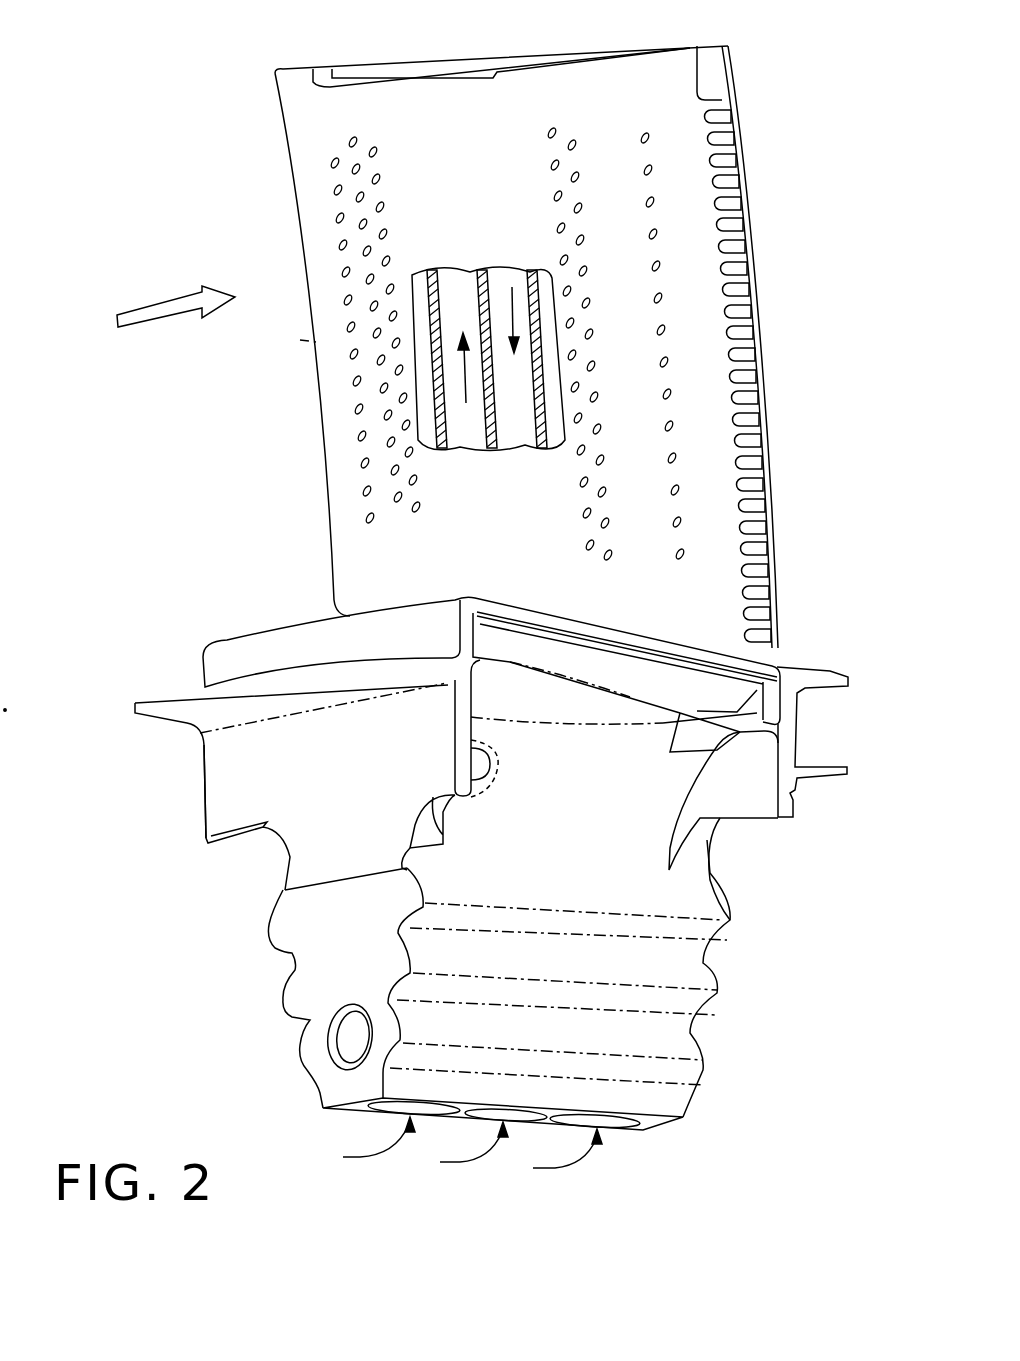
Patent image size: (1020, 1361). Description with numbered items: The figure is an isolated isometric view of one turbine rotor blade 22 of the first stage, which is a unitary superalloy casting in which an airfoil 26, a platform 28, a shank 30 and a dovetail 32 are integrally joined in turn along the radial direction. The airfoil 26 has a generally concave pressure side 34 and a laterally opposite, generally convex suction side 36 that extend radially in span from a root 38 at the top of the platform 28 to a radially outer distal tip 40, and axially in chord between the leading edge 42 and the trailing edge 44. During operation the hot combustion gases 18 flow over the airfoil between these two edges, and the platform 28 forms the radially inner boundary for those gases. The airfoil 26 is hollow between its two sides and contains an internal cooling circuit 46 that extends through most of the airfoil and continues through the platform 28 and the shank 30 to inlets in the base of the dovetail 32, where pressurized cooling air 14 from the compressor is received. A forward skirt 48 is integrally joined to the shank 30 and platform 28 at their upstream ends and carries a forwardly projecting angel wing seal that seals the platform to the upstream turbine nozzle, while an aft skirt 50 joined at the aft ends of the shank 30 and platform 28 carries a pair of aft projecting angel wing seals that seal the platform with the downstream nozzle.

The pressurized cooling air 14 is at (503, 300).
The hot combustion gases 18 is at (158, 303).
The turbine rotor blade 22 is at (770, 212).
The airfoil 26 is at (283, 133).
The platform 28 is at (227, 640).
The shank 30 is at (560, 813).
The dovetail 32 is at (718, 990).
The pressure side 34 is at (708, 365).
The suction side 36 is at (313, 344).
The root 38 is at (592, 613).
The tip 40 is at (625, 48).
The leading edge 42 is at (338, 398).
The trailing edge 44 is at (762, 455).
The internal cooling circuit 46 is at (457, 283).
The forward skirt 48 is at (203, 787).
The aft skirt 50 is at (793, 727).